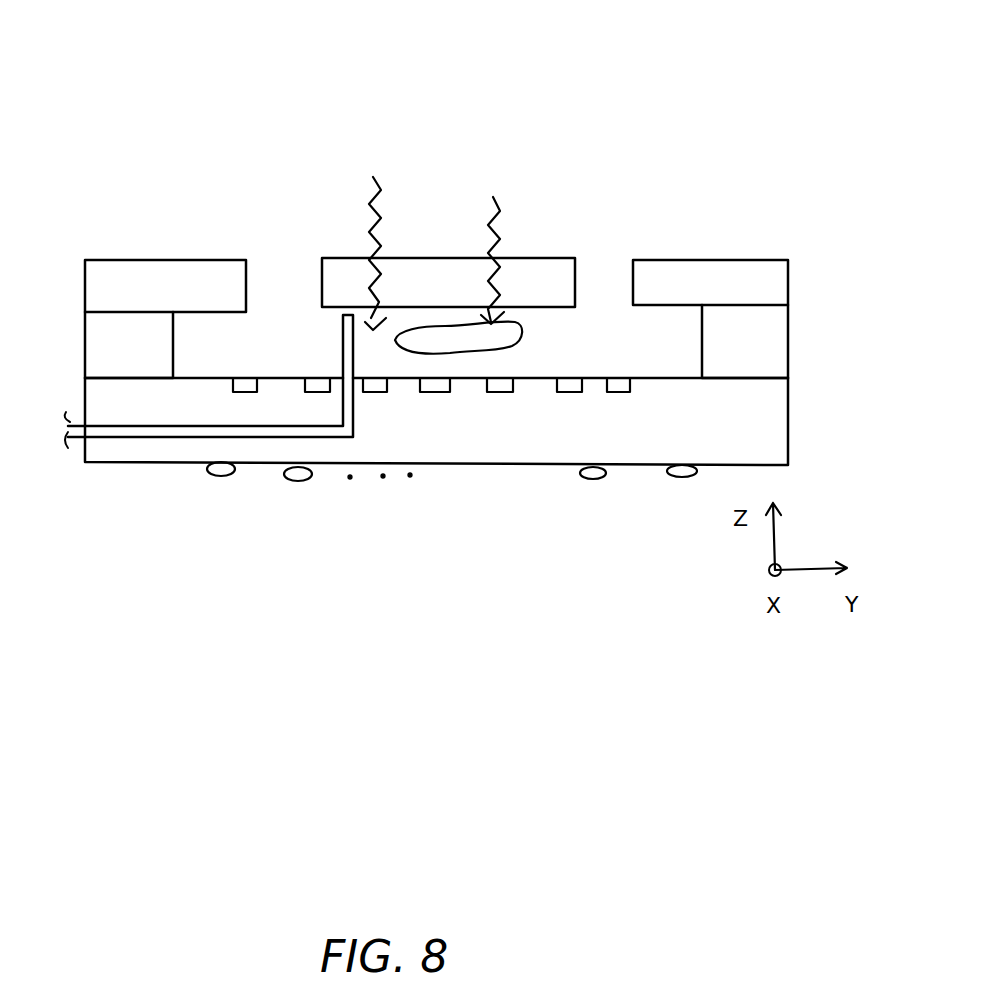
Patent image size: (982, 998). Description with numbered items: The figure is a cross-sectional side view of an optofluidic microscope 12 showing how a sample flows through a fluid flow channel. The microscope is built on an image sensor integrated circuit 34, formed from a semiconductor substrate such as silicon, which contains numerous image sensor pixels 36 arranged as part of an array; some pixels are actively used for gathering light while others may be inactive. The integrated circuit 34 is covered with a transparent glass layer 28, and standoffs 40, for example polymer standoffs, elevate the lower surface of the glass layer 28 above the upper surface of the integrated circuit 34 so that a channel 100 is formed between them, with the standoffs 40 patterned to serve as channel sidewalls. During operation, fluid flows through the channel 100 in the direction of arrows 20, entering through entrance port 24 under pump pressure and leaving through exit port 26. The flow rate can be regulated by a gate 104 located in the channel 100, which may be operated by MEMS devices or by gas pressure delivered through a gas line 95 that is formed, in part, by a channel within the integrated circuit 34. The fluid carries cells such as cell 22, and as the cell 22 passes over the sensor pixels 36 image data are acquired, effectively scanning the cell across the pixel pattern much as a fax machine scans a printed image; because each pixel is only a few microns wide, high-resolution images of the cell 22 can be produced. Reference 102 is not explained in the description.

The optofluidic microscope 12 is at (534, 94).
The arrows 20 is at (332, 342).
The cell 22 is at (508, 331).
The entrance port 24 is at (256, 272).
The exit port 26 is at (560, 342).
The glass layer 28 is at (436, 285).
The image sensor integrated circuit 34 is at (790, 413).
The image sensor pixels 36 is at (243, 394).
The standoffs 40 is at (436, 341).
The gas line 95 is at (172, 437).
The channel 100 is at (655, 363).
The heat flow paths 102 is at (373, 177).
The gate 104 is at (357, 361).